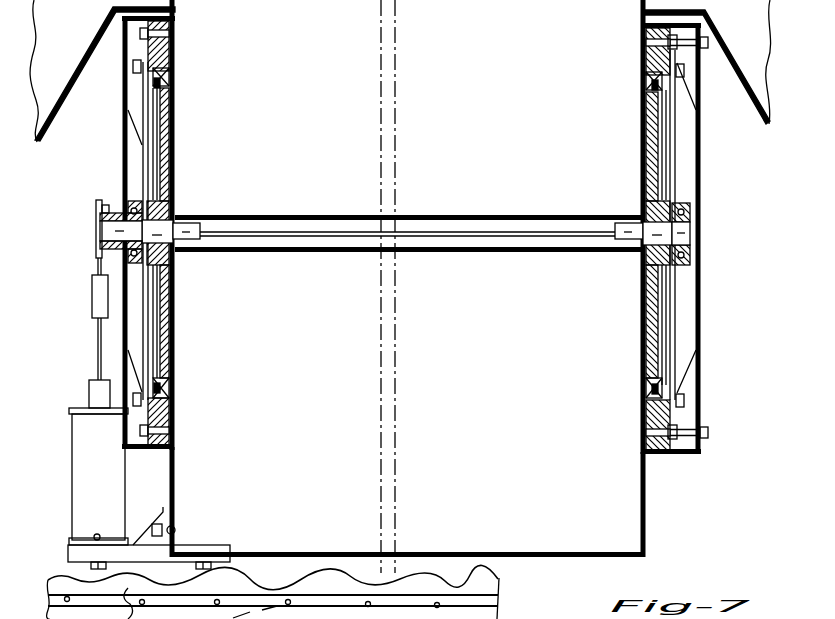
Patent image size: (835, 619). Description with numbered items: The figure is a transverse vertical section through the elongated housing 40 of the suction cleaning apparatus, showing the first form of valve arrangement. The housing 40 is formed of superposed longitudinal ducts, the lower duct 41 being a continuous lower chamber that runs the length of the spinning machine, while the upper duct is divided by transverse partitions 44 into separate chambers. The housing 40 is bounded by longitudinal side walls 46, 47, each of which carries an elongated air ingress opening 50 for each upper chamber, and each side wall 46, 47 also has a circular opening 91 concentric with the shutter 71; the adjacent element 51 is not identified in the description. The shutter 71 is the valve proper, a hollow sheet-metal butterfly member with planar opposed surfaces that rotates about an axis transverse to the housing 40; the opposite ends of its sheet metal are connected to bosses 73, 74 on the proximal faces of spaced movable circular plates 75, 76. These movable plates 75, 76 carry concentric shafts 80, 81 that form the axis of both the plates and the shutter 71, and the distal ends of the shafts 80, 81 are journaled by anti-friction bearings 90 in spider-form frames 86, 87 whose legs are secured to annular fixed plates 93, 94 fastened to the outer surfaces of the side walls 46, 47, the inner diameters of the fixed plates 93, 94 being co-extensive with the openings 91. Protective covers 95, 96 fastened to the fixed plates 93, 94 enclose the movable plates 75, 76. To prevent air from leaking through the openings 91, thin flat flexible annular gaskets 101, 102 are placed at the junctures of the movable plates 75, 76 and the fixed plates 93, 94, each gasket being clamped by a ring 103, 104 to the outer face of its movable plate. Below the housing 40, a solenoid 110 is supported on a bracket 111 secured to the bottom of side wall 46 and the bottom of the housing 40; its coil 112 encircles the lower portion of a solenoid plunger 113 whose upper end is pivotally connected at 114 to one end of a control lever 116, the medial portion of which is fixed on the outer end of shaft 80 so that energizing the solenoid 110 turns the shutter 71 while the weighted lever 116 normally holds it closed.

The elongated housing 40 is at (647, 507).
The lower duct 41 is at (519, 555).
The transverse partition 44 is at (442, 60).
The side wall 46 is at (176, 470).
The side wall 47 is at (640, 500).
The air ingress opening 50 is at (273, 592).
The cover 51 is at (56, 107).
The shutter 71 is at (331, 212).
The boss 73 is at (189, 213).
The boss 74 is at (622, 218).
The movable circular plate 75 is at (172, 146).
The movable circular plate 76 is at (648, 128).
The shaft 80 is at (162, 245).
The shaft 81 is at (651, 248).
The frame 86 is at (136, 143).
The frame 87 is at (696, 163).
The anti-friction bearing 90 is at (125, 205).
The circular opening 91 is at (173, 76).
The fixed plate 93 is at (175, 52).
The fixed plate 94 is at (646, 52).
The protective cover 95 is at (133, 72).
The protective cover 96 is at (698, 279).
The gasket 101 is at (166, 86).
The gasket 102 is at (656, 84).
The ring 103 is at (156, 118).
The ring 104 is at (665, 109).
The solenoid 110 is at (73, 486).
The bracket 111 is at (78, 552).
The coil 112 is at (90, 440).
The solenoid plunger 113 is at (100, 348).
The pivotal connection 114 is at (94, 216).
The control lever 116 is at (98, 244).